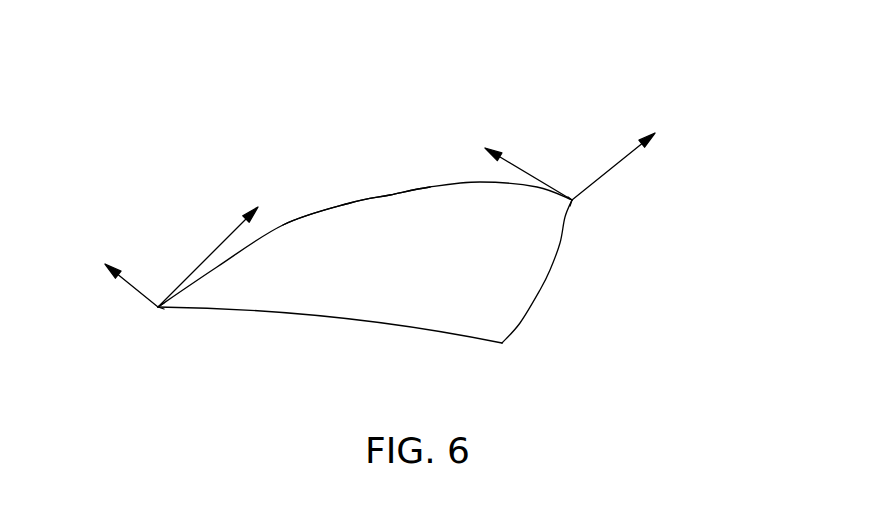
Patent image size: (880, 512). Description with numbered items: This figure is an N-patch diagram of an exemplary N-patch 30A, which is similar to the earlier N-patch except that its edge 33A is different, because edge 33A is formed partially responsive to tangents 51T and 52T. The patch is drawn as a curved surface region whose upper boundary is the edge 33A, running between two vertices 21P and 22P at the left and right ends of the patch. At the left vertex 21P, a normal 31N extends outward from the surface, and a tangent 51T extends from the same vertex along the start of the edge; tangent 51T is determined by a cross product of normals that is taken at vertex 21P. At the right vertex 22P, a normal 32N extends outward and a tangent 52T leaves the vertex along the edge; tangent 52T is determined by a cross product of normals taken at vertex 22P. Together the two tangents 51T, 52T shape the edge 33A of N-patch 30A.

The N-patch 30A is at (613, 338).
The edge 33A is at (355, 203).
The vertex 21P is at (162, 310).
The vertex 22P is at (577, 202).
The normal 31N is at (130, 288).
The tangent 51T is at (218, 245).
The tangent 52T is at (532, 173).
The normal 32N is at (627, 162).